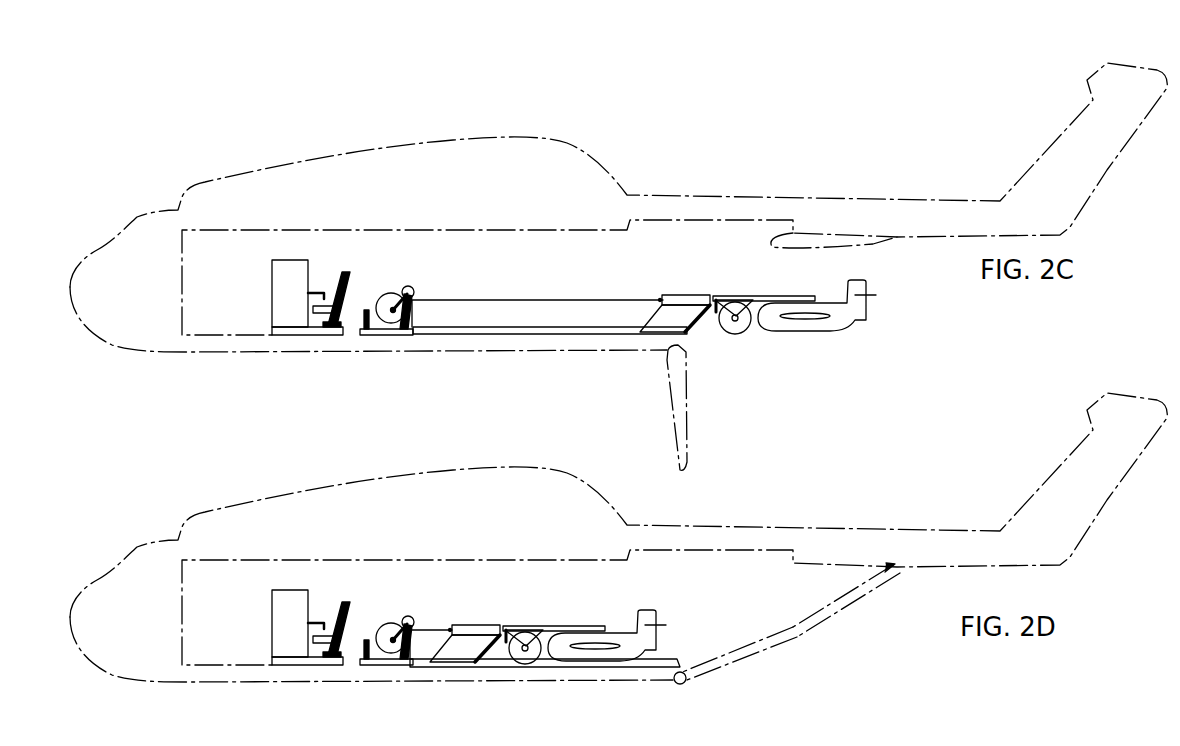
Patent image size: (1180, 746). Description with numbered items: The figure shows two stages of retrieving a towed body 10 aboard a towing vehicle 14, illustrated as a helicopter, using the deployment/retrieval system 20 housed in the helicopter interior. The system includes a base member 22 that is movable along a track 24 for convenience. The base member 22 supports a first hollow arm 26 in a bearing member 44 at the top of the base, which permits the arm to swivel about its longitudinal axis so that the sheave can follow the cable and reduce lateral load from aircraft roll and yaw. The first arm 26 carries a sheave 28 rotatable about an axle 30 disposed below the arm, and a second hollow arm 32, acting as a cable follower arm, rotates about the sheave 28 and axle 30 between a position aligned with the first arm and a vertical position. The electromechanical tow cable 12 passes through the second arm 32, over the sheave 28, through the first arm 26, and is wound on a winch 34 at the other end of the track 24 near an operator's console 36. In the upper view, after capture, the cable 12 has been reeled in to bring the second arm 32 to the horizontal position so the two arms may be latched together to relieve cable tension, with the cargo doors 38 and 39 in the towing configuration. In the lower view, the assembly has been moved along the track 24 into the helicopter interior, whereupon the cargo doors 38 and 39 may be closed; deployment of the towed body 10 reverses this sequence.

In FIG. 2C, the towed body 10 is at (845, 329).
In FIG. 2D, the towed body 10 is at (620, 633).
In FIG. 2C, the electromechanical tow cable 12 is at (478, 298).
In FIG. 2D, the electromechanical tow cable 12 is at (420, 628).
In FIG. 2C, the towing vehicle 14 is at (604, 178).
In FIG. 2D, the towing vehicle 14 is at (842, 524).
In FIG. 2C, the deployment/retrieval system 20 is at (662, 289).
In FIG. 2D, the deployment/retrieval system 20 is at (511, 604).
In FIG. 2C, the base member 22 is at (655, 306).
In FIG. 2D, the base member 22 is at (441, 632).
In FIG. 2C, the track 24 is at (437, 327).
In FIG. 2D, the track 24 is at (498, 666).
In FIG. 2C, the first hollow arm 26 is at (722, 296).
In FIG. 2D, the first hollow arm 26 is at (518, 628).
In FIG. 2C, the sheave 28 is at (724, 328).
In FIG. 2D, the sheave 28 is at (523, 662).
In FIG. 2C, the axle 30 is at (739, 326).
In FIG. 2D, the axle 30 is at (538, 662).
In FIG. 2C, the second hollow arm 32 is at (768, 294).
In FIG. 2D, the second hollow arm 32 is at (558, 626).
In FIG. 2C, the winch 34 is at (382, 294).
In FIG. 2D, the winch 34 is at (385, 623).
In FIG. 2C, the operator's console 36 is at (270, 288).
In FIG. 2D, the operator's console 36 is at (276, 617).
In FIG. 2C, the cargo door 38 is at (874, 246).
In FIG. 2D, the cargo door 38 is at (860, 598).
In FIG. 2C, the cargo door 39 is at (688, 412).
In FIG. 2D, the cargo door 39 is at (770, 650).
In FIG. 2C, the bearing member 44 is at (683, 293).
In FIG. 2D, the bearing member 44 is at (475, 630).